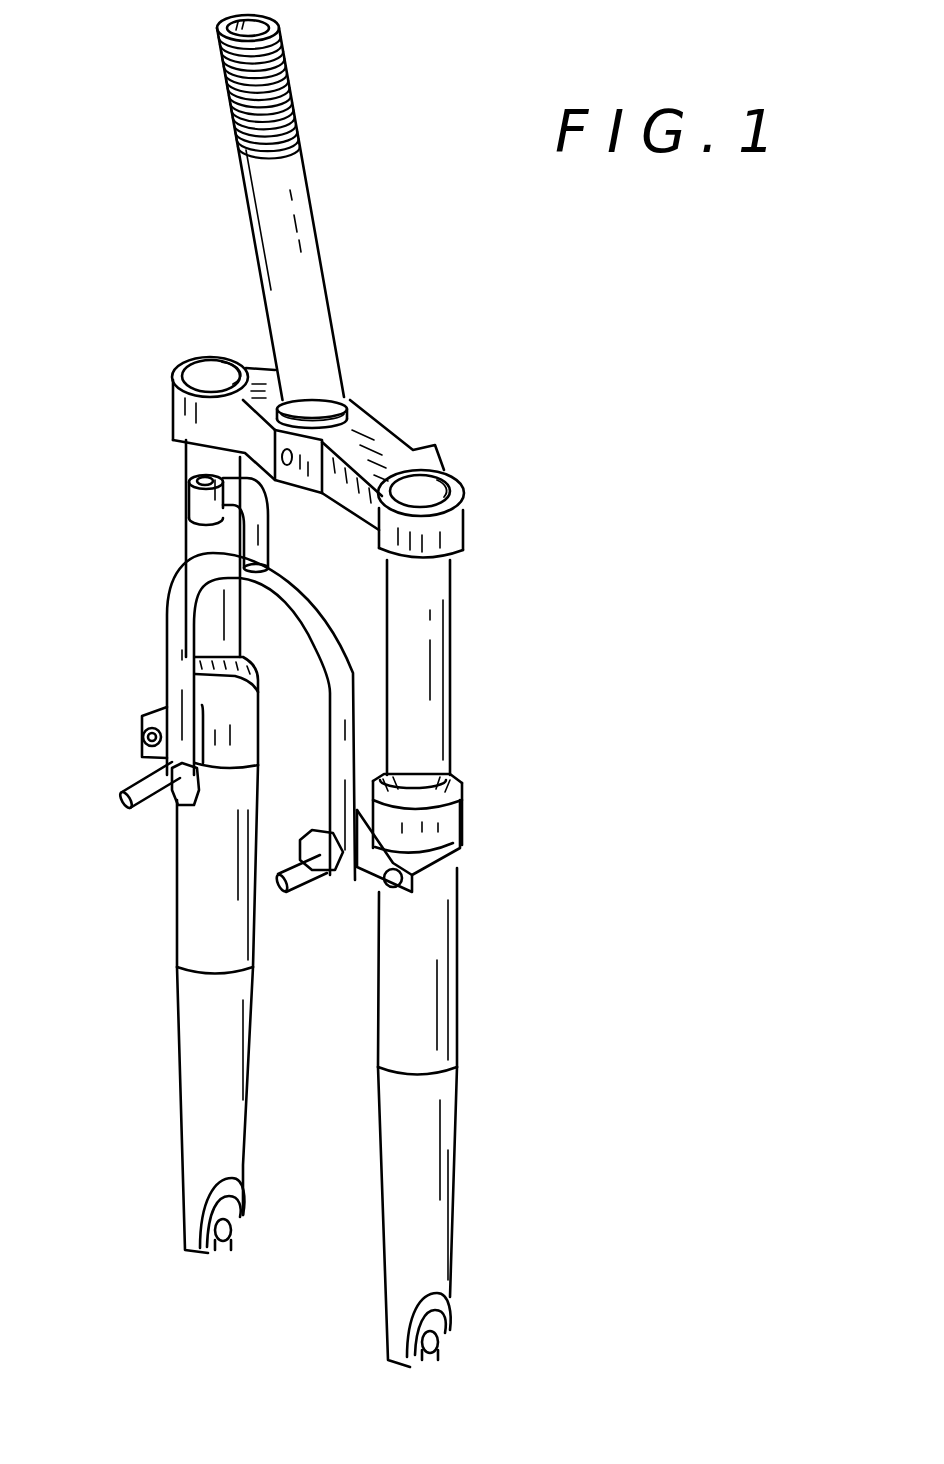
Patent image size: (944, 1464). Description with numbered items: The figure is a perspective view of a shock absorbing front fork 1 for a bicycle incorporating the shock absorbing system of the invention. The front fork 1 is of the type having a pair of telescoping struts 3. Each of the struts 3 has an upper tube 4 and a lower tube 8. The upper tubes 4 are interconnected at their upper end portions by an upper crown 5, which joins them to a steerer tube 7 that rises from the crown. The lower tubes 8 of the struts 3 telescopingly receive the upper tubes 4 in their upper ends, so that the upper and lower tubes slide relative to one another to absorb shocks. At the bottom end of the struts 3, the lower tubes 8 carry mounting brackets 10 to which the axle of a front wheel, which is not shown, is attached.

The shock absorbing front fork 1 is at (478, 462).
The telescoping struts 3 is at (460, 730).
The upper tubes 4 is at (188, 505).
The upper crown 5 is at (377, 445).
The steerer tube 7 is at (307, 262).
The lower tubes 8 is at (188, 1007).
The mounting brackets 10 is at (227, 1247).